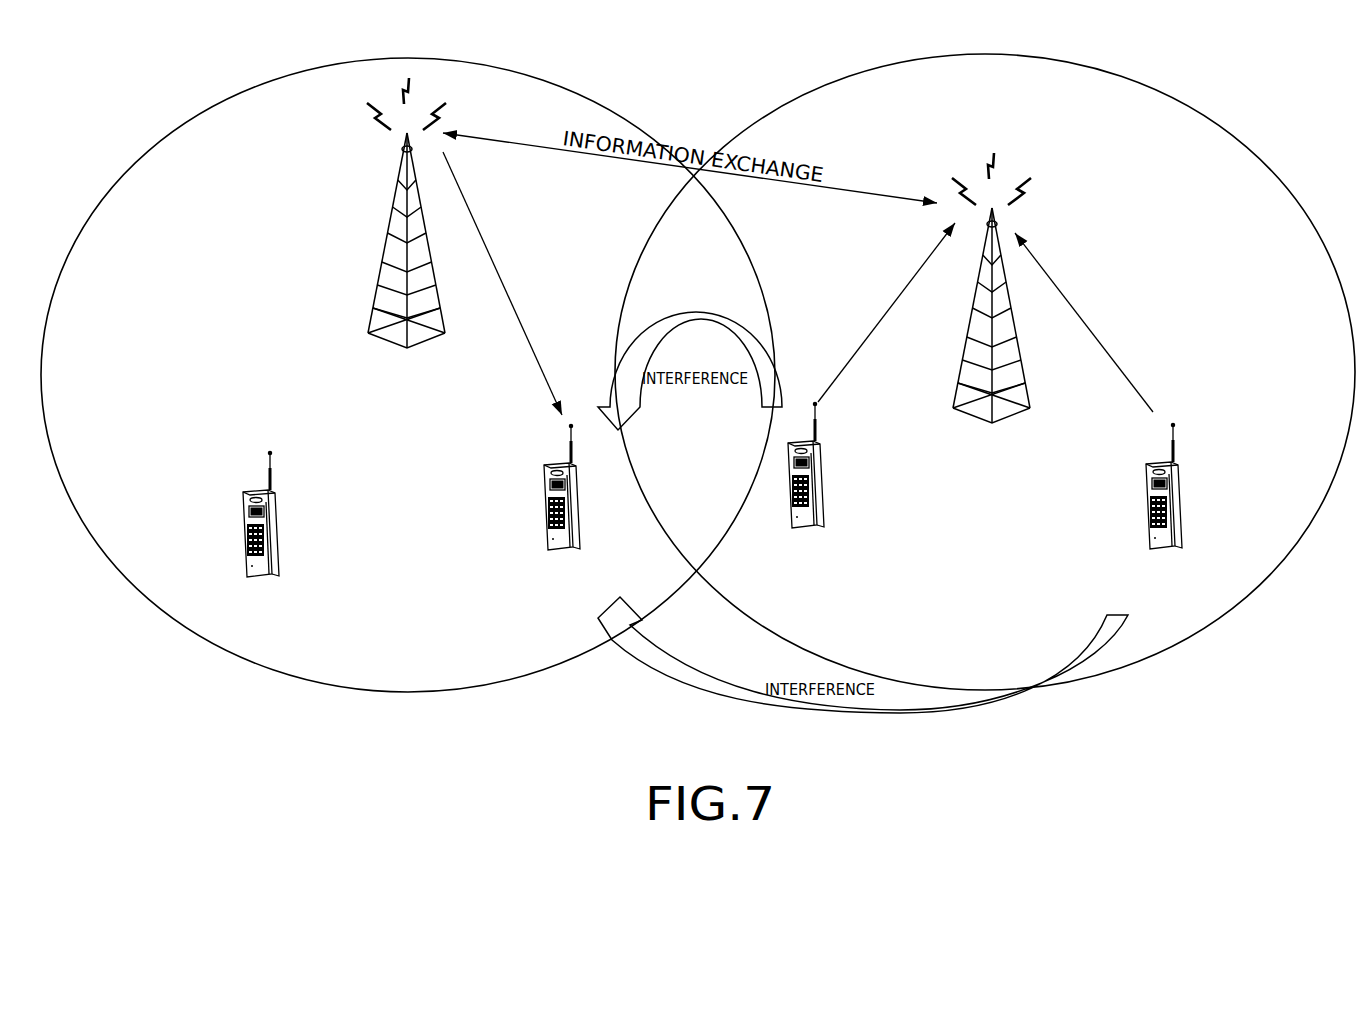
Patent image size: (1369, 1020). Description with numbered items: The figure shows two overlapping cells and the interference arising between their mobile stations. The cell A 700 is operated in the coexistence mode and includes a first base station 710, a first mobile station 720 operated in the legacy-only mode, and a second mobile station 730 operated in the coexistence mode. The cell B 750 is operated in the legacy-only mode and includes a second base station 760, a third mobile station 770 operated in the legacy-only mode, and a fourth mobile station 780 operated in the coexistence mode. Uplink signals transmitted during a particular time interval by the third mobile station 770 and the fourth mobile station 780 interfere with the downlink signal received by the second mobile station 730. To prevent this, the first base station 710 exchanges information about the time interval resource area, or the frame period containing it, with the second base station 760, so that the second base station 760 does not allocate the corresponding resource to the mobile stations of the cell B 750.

The cell A 700 is at (410, 693).
The first base station 710 is at (409, 230).
The first mobile station 720 is at (267, 545).
The second mobile station 730 is at (570, 520).
The cell B 750 is at (1180, 638).
The second base station 760 is at (993, 305).
The third mobile station 770 is at (815, 501).
The fourth mobile station 780 is at (1175, 519).